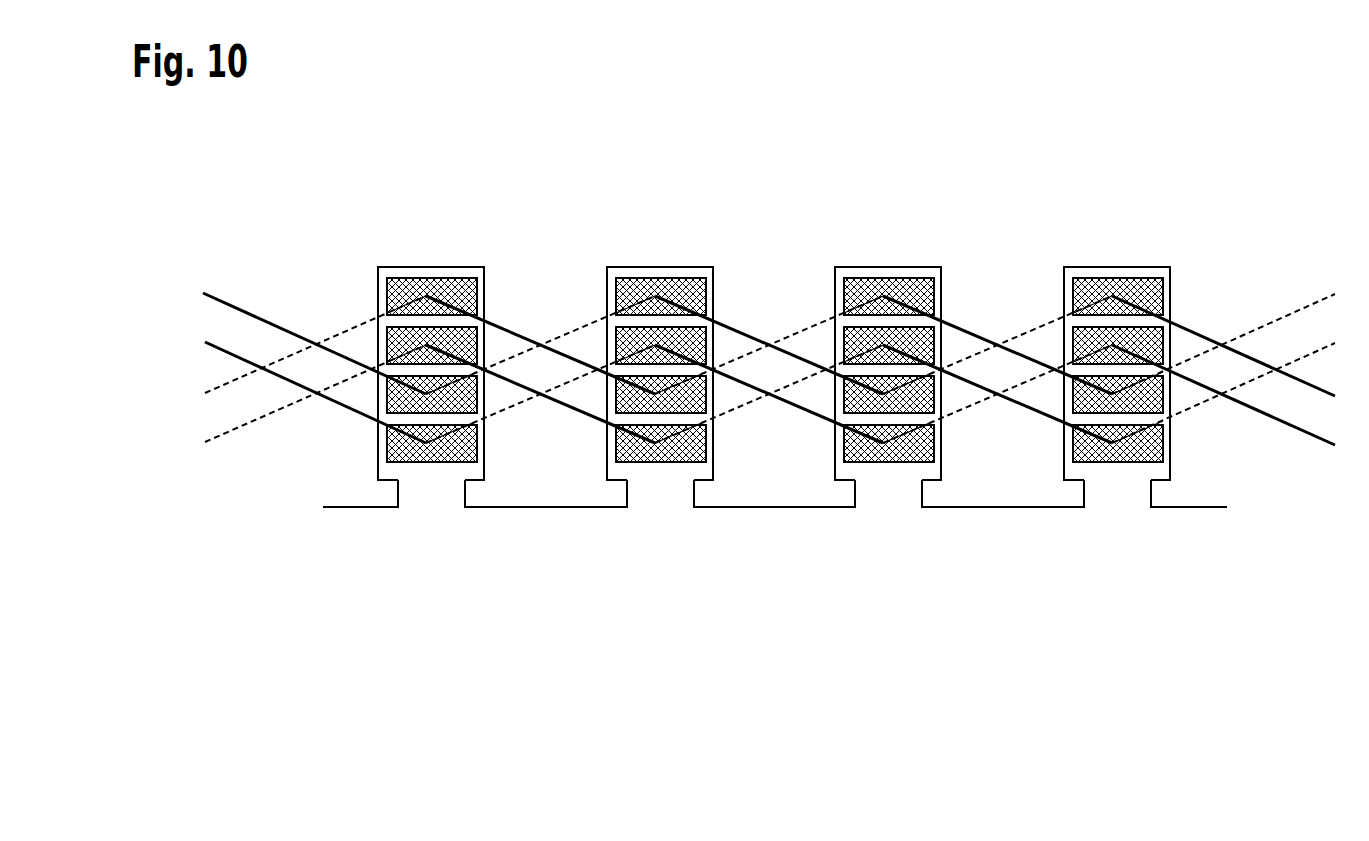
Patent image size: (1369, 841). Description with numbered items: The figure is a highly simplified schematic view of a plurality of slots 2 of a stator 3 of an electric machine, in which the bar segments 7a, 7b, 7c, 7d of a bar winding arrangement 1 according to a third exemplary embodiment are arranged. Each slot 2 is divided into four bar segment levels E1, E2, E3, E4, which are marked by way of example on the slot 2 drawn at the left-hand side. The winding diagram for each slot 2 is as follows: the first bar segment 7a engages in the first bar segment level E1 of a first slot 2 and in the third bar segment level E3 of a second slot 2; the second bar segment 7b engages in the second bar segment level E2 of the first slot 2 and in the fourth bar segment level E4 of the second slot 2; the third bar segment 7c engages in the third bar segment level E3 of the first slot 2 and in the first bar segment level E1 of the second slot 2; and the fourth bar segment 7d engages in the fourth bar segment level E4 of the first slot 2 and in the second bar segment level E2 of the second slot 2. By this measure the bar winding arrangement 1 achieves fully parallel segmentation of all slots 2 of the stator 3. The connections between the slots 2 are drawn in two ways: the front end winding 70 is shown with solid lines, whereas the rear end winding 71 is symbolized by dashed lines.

The bar winding arrangement 1 is at (278, 525).
The slot 2 is at (437, 267).
The stator 3 is at (1200, 280).
The first bar segment 7a is at (464, 305).
The second bar segment 7b is at (460, 350).
The third bar segment 7c is at (462, 395).
The fourth bar segment 7d is at (453, 440).
The front end winding 70 is at (740, 332).
The rear end winding 71 is at (1020, 336).
The first bar segment level E1 is at (365, 290).
The second bar segment level E2 is at (360, 340).
The third bar segment level E3 is at (360, 388).
The fourth bar segment level E4 is at (365, 447).